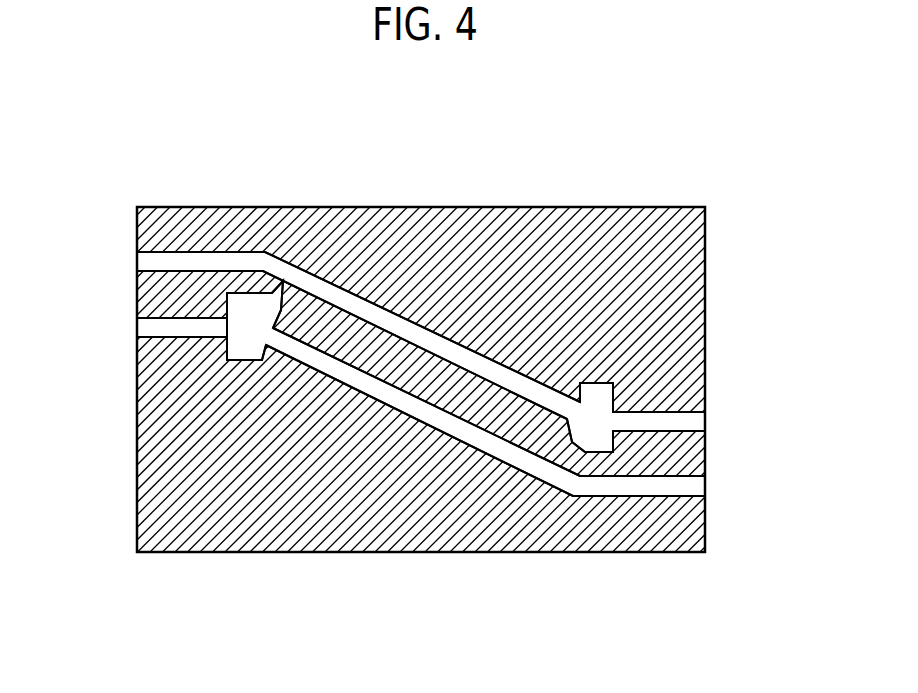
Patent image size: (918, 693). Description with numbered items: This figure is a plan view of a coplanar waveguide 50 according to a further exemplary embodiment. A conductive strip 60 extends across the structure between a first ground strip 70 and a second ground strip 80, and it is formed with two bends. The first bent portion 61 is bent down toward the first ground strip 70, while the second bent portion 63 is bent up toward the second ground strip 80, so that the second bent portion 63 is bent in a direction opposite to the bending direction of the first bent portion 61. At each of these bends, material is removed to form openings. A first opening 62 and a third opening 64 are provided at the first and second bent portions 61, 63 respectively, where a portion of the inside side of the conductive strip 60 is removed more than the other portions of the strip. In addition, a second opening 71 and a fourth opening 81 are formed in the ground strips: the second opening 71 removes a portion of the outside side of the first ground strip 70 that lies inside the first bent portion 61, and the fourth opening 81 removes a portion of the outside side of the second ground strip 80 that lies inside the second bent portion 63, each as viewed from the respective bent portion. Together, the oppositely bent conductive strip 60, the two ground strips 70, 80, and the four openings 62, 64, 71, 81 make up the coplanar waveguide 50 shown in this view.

The coplanar waveguide 50 is at (130, 86).
The conductive strip 60 is at (140, 299).
The first bent portion 61 is at (280, 270).
The first opening 62 is at (255, 303).
The second bent portion 63 is at (572, 495).
The third opening 64 is at (580, 468).
The first ground strip 70 is at (140, 430).
The second opening 71 is at (250, 350).
The second ground strip 80 is at (140, 221).
The fourth opening 81 is at (600, 386).